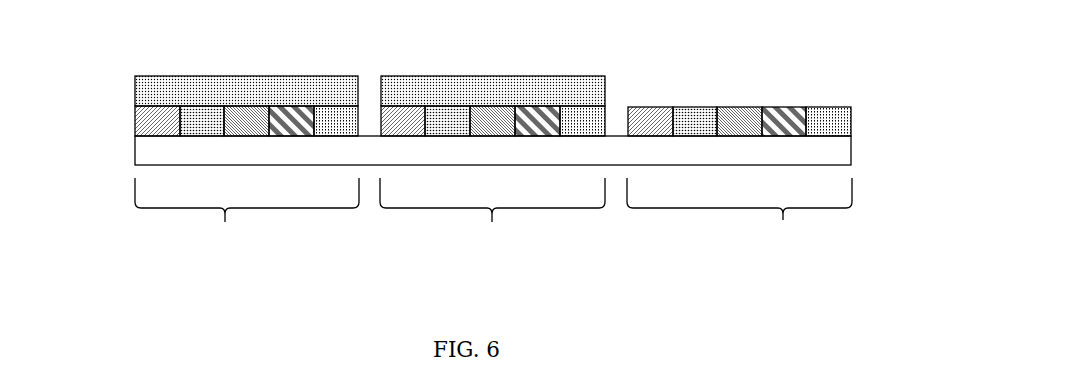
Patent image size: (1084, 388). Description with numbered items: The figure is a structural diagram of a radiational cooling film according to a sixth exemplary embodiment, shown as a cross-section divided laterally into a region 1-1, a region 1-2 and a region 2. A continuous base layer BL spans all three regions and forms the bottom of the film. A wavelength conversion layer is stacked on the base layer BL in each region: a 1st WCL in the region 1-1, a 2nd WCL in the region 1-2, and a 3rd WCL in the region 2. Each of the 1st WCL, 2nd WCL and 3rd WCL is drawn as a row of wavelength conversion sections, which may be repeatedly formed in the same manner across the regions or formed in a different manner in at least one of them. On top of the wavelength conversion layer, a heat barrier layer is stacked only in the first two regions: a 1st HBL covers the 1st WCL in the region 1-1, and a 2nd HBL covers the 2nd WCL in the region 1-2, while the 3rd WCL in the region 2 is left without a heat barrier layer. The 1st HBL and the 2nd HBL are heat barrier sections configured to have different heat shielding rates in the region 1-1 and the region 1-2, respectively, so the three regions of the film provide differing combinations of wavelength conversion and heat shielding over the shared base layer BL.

The heat barrier layer 1st HBL is at (135, 93).
The wavelength conversion layer 1st WCL is at (135, 127).
The heat barrier layer 2nd HBL is at (607, 75).
The wavelength conversion layer 2nd WCL is at (380, 117).
The wavelength conversion layer 3rd WCL is at (852, 110).
The base layer BL is at (852, 150).
The element region 1-1 is at (247, 220).
The element region 1-2 is at (492, 220).
The element region 2 is at (739, 220).